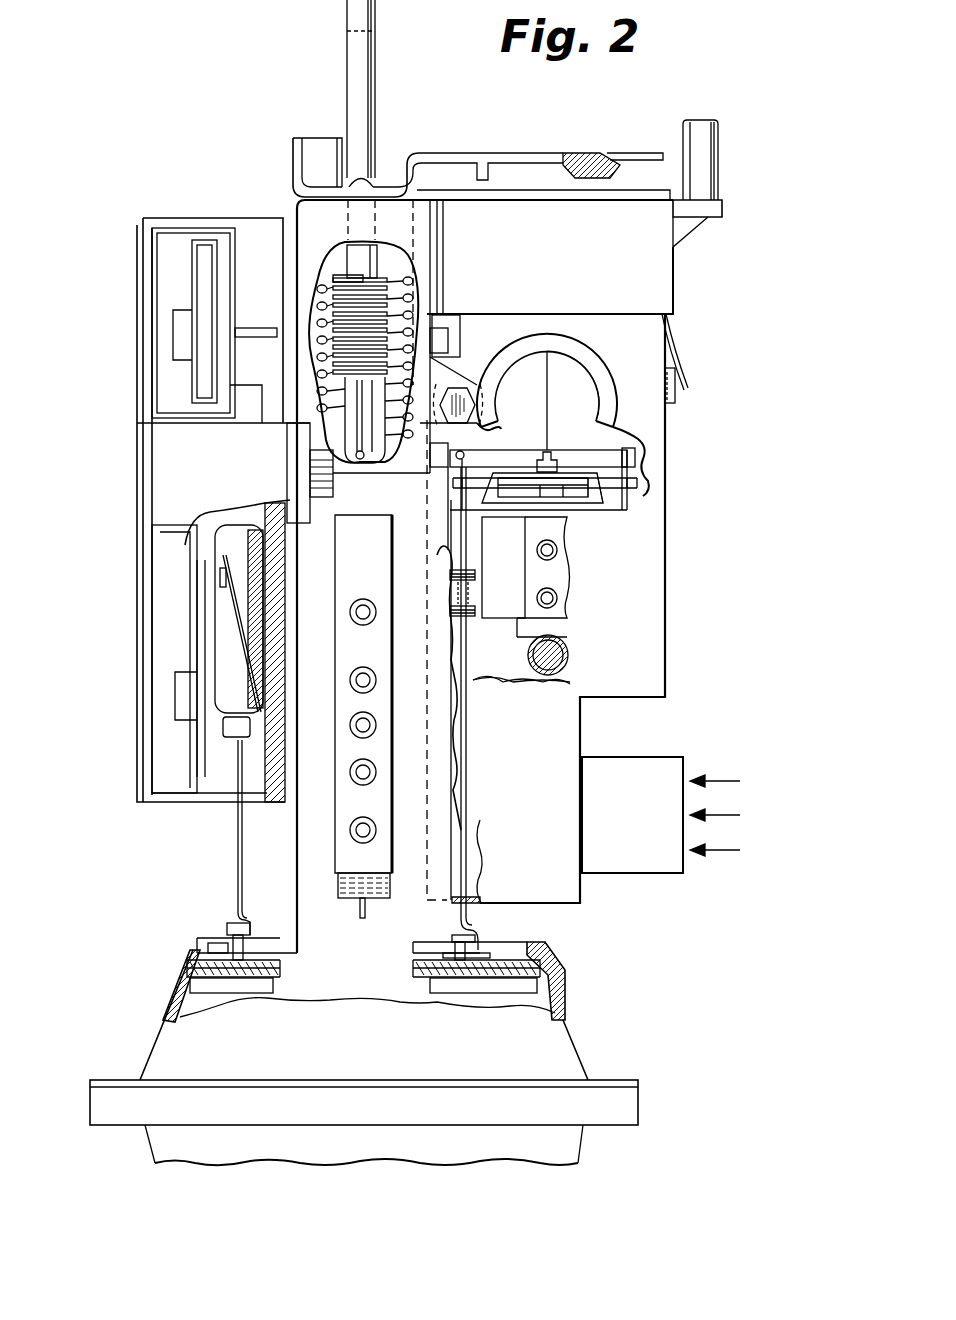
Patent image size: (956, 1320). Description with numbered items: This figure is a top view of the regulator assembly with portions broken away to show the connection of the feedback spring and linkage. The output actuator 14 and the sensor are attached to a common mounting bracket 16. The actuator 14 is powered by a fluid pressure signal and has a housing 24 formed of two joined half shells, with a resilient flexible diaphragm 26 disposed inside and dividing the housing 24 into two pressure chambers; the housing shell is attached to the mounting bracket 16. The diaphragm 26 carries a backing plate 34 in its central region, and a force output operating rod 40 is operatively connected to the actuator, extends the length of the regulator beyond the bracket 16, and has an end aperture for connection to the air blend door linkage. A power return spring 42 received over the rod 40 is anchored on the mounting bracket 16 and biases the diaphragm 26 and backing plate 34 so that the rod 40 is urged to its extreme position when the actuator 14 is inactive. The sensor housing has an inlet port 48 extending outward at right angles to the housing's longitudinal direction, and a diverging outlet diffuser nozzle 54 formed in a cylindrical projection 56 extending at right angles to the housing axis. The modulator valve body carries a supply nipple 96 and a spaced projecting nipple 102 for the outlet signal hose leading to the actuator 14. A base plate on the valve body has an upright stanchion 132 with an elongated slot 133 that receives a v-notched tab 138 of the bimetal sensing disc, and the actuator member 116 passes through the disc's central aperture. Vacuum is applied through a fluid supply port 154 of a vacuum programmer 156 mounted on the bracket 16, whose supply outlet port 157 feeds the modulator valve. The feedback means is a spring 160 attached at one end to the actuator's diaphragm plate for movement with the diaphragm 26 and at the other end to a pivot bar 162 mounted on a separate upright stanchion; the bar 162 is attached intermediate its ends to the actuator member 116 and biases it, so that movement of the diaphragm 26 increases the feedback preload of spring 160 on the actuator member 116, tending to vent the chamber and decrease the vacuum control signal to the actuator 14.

The output actuator 14 is at (152, 1031).
The mounting bracket 16 is at (297, 888).
The housing 24 is at (585, 1135).
The diaphragm 26 is at (183, 1008).
The backing plate 34 is at (437, 1005).
The force output operating rod 40 is at (377, 62).
The power return spring 42 is at (420, 302).
The inlet port 48 is at (653, 873).
The diverging outlet diffuser nozzle 54 is at (570, 354).
The cylindrical projection 56 is at (603, 366).
The supply nipple 96 is at (558, 553).
The projecting nipple 102 is at (559, 600).
The actuator member 116 is at (548, 460).
The stanchion 132 is at (616, 505).
The slot 133 is at (575, 492).
The v-notched tab 138 is at (515, 487).
The fluid supply port 154 is at (351, 838).
The vacuum programmer 156 is at (380, 561).
The supply outlet port 157 is at (352, 604).
The feedback spring 160 is at (460, 605).
The pivot bar 162 is at (530, 450).